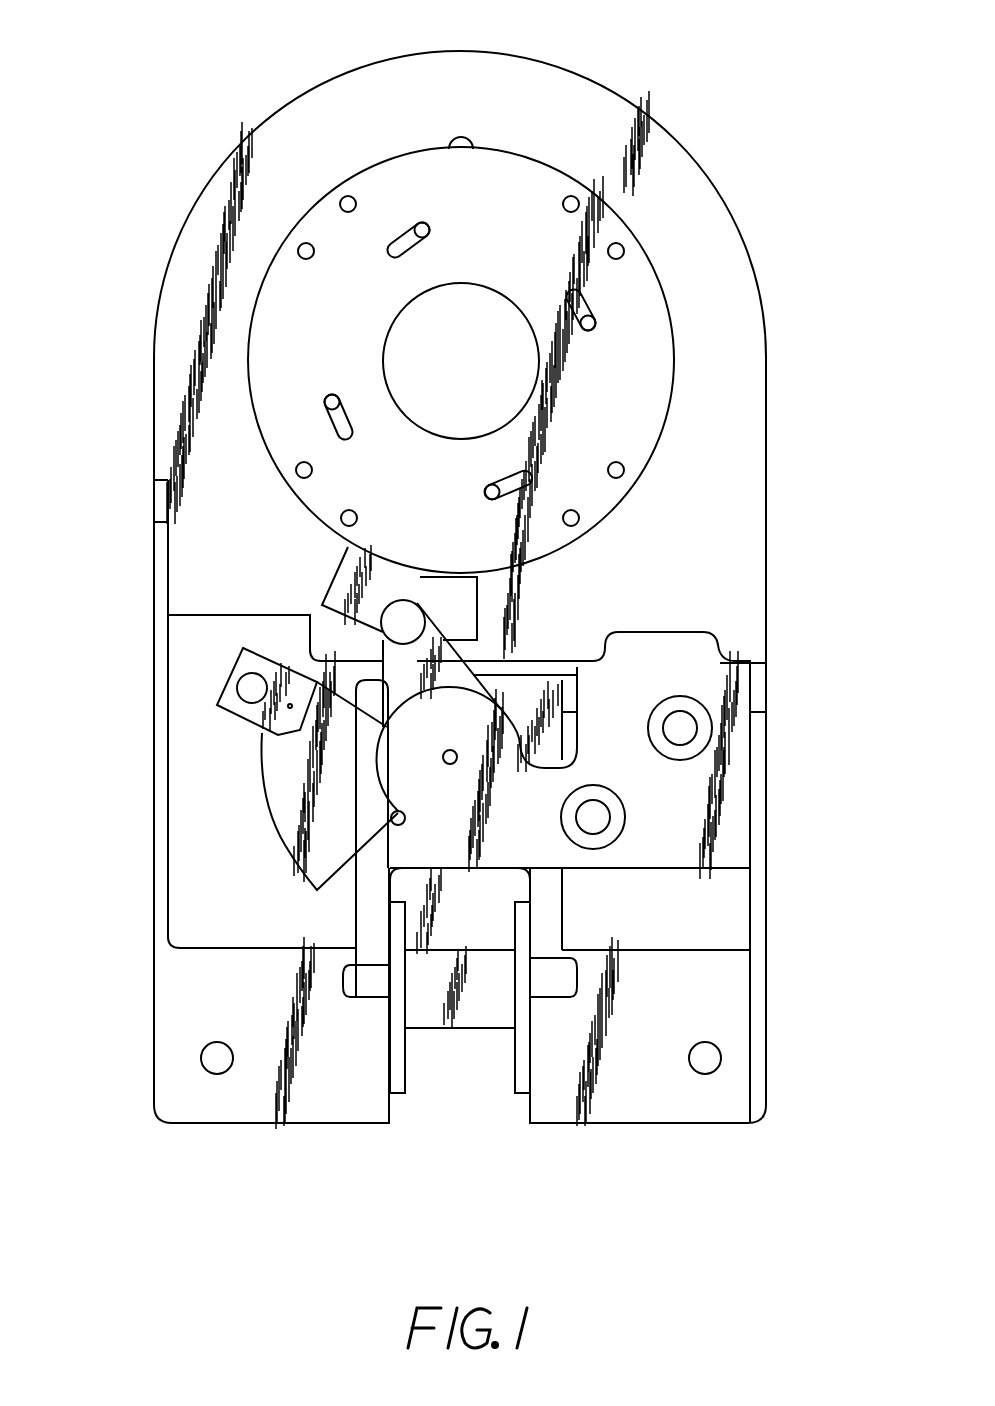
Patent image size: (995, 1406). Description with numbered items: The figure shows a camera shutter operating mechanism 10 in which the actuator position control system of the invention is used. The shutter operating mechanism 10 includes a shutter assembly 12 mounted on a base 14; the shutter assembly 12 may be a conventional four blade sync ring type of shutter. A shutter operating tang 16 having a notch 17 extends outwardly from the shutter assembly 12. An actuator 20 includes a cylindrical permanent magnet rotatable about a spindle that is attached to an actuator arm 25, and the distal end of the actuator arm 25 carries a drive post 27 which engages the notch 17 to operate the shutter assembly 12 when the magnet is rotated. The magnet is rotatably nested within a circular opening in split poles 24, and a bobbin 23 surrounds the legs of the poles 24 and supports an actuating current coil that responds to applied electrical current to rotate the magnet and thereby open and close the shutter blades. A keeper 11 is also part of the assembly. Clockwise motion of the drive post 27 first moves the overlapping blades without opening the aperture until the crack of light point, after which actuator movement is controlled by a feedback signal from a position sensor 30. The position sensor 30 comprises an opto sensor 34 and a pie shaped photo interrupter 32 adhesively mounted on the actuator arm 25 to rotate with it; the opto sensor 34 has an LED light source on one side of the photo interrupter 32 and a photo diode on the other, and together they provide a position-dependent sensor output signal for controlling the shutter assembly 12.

The shutter operating mechanism 10 is at (735, 88).
The keeper 11 is at (716, 633).
The shutter assembly 12 is at (262, 281).
The base 14 is at (752, 260).
The shutter operating tang 16 is at (333, 575).
The notch 17 is at (420, 600).
The actuator 20 is at (548, 636).
The bobbin 23 is at (468, 1028).
The poles 24 is at (357, 955).
The actuator arm 25 is at (420, 620).
The drive post 27 is at (403, 610).
The position sensor 30 is at (232, 760).
The photo interrupter 32 is at (266, 800).
The opto sensor 34 is at (225, 660).